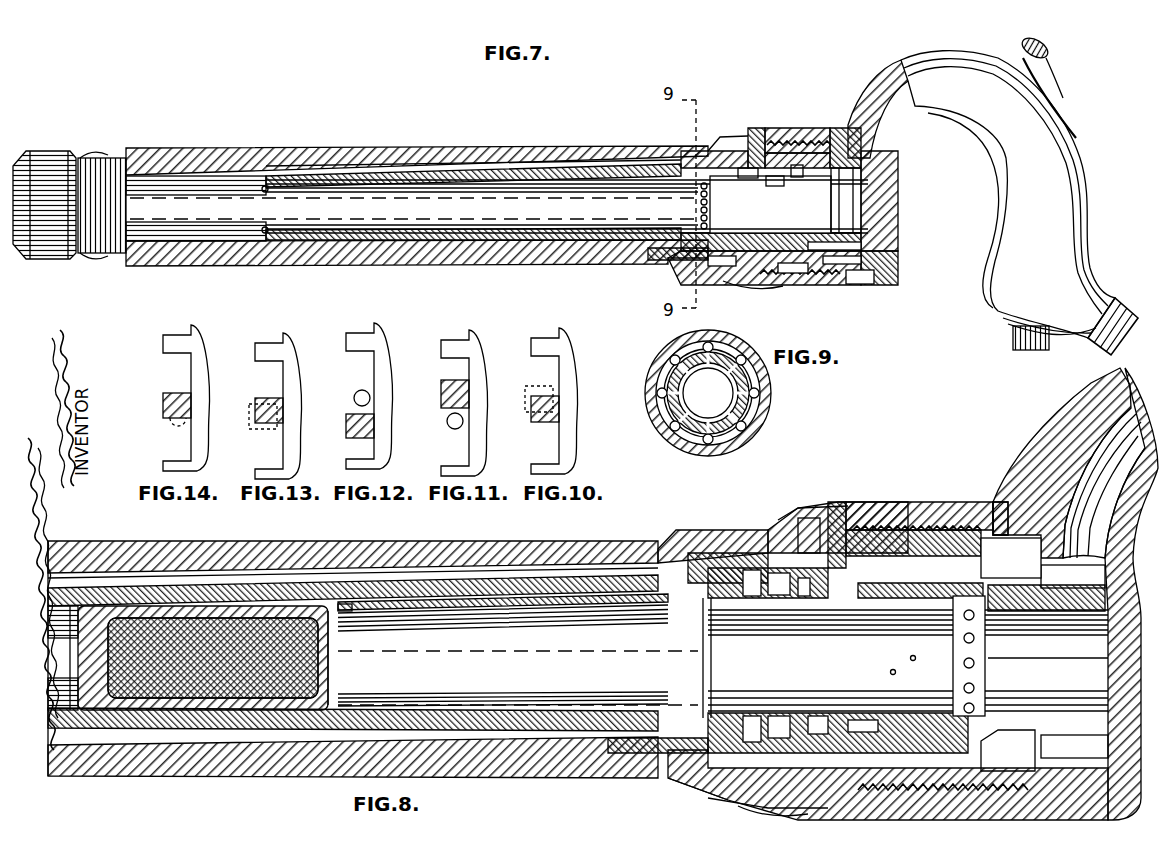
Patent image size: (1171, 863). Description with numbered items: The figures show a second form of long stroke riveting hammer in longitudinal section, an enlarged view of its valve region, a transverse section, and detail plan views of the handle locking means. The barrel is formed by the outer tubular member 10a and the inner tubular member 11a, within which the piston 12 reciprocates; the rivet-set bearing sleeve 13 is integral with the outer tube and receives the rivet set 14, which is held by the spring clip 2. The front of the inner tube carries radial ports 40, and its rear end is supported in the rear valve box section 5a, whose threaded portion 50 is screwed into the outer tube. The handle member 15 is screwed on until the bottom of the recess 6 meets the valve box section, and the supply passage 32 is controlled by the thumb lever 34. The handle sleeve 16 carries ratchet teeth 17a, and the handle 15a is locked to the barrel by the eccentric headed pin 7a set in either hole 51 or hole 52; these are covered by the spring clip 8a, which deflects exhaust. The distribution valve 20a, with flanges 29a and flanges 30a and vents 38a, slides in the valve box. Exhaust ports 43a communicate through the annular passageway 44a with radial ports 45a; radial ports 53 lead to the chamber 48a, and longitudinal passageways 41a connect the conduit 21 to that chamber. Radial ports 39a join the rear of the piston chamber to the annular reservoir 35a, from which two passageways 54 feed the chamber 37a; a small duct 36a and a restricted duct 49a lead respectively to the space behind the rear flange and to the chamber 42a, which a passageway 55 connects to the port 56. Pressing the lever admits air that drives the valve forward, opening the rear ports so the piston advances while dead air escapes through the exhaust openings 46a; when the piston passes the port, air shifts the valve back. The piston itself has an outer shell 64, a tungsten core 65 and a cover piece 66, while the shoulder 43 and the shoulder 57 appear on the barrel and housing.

In FIG. 7, the spring clip 2 is at (112, 150).
In FIG. 7, the rear valve box section 5a is at (870, 238).
In FIG. 8, the rear valve box section 5a is at (1072, 605).
In FIG. 7, the recess 6 is at (875, 252).
In FIG. 8, the recess 6 is at (1080, 740).
In FIG. 7, the eccentric headed pin 7a is at (748, 120).
In FIG. 14, the eccentric headed pin 7a is at (155, 396).
In FIG. 13, the eccentric headed pin 7a is at (247, 399).
In FIG. 12, the eccentric headed pin 7a is at (338, 415).
In FIG. 11, the eccentric headed pin 7a is at (433, 385).
In FIG. 10, the eccentric headed pin 7a is at (523, 393).
In FIG. 8, the eccentric headed pin 7a is at (829, 494).
In FIG. 7, the spring clip 8a is at (718, 128).
In FIG. 8, the spring clip 8a is at (762, 508).
In FIG. 7, the outer tubular member 10a is at (500, 145).
In FIG. 9, the outer tubular member 10a is at (755, 413).
In FIG. 8, the outer tubular member 10a is at (512, 760).
In FIG. 7, the inner tubular member 11a is at (422, 163).
In FIG. 8, the inner tubular member 11a is at (608, 728).
In FIG. 7, the piston 12 is at (328, 170).
In FIG. 8, the piston 12 is at (96, 702).
In FIG. 7, the rivet-set bearing sleeve 13 is at (208, 152).
In FIG. 7, the rivet set 14 is at (48, 143).
In FIG. 8, the handle member 15 is at (1060, 412).
In FIG. 7, the handle 15a is at (1050, 152).
In FIG. 8, the handle sleeve 16 is at (988, 500).
In FIG. 7, the ratchet teeth 17a is at (750, 280).
In FIG. 14, the ratchet teeth 17a is at (160, 332).
In FIG. 13, the ratchet teeth 17a is at (262, 332).
In FIG. 12, the ratchet teeth 17a is at (345, 348).
In FIG. 11, the ratchet teeth 17a is at (440, 354).
In FIG. 10, the ratchet teeth 17a is at (530, 334).
In FIG. 8, the ratchet teeth 17a is at (775, 808).
In FIG. 9, the distribution valve 20a is at (708, 393).
In FIG. 8, the distribution valve 20a is at (705, 686).
In FIG. 7, the conduit 21 is at (602, 154).
In FIG. 8, the conduit 21 is at (493, 560).
In FIG. 7, the valve flanges 29a is at (788, 170).
In FIG. 8, the valve flanges 29a is at (855, 712).
In FIG. 7, the valve flanges 30a is at (742, 172).
In FIG. 8, the valve flanges 30a is at (770, 590).
In FIG. 7, the supply passage 32 is at (860, 75).
In FIG. 8, the supply passage 32 is at (1127, 418).
In FIG. 7, the thumb lever 34 is at (1038, 62).
In FIG. 7, the annular reservoir 35a is at (833, 120).
In FIG. 8, the annular reservoir 35a is at (1010, 494).
In FIG. 8, the small duct 36a is at (1011, 558).
In FIG. 8, the chamber 37a is at (905, 520).
In FIG. 8, the vents 38a is at (917, 659).
In FIG. 7, the radial ports 39a is at (852, 200).
In FIG. 8, the radial ports 39a is at (978, 658).
In FIG. 7, the radial ports 40 is at (252, 178).
In FIG. 7, the longitudinal passageways 41a is at (660, 252).
In FIG. 9, the longitudinal passageways 41a is at (650, 383).
In FIG. 8, the longitudinal passageways 41a is at (640, 728).
In FIG. 7, the chamber 42a is at (702, 258).
In FIG. 8, the chamber 42a is at (742, 590).
In FIG. 8, the shoulder 43 is at (668, 790).
In FIG. 9, the radial exhaust ports 43a is at (662, 362).
In FIG. 8, the radial exhaust ports 43a is at (720, 548).
In FIG. 7, the annular passageway 44a is at (700, 143).
In FIG. 8, the annular passageway 44a is at (770, 523).
In FIG. 7, the radial ports 45a is at (692, 188).
In FIG. 8, the radial ports 45a is at (798, 510).
In FIG. 8, the exhaust openings 46a is at (740, 800).
In FIG. 7, the chamber 48a is at (785, 265).
In FIG. 8, the chamber 48a is at (810, 590).
In FIG. 7, the restricted duct 49a is at (768, 121).
In FIG. 8, the restricted duct 49a is at (858, 498).
In FIG. 7, the threaded portion 50 is at (848, 270).
In FIG. 8, the threaded portion 50 is at (1008, 750).
In FIG. 12, the hole 51 is at (346, 388).
In FIG. 11, the hole 52 is at (440, 415).
In FIG. 7, the radial ports 53 is at (762, 178).
In FIG. 8, the radial ports 53 is at (808, 708).
In FIG. 7, the passageways 54 is at (805, 134).
In FIG. 8, the passageways 54 is at (935, 518).
In FIG. 7, the passageway 55 is at (552, 168).
In FIG. 9, the passageway 55 is at (690, 345).
In FIG. 8, the passageway 55 is at (566, 605).
In FIG. 7, the port 56 is at (512, 185).
In FIG. 8, the port 56 is at (340, 603).
In FIG. 8, the shoulder 57 is at (660, 538).
In FIG. 8, the outer shell 64 is at (204, 702).
In FIG. 8, the core 65 is at (258, 675).
In FIG. 8, the cover piece 66 is at (322, 664).